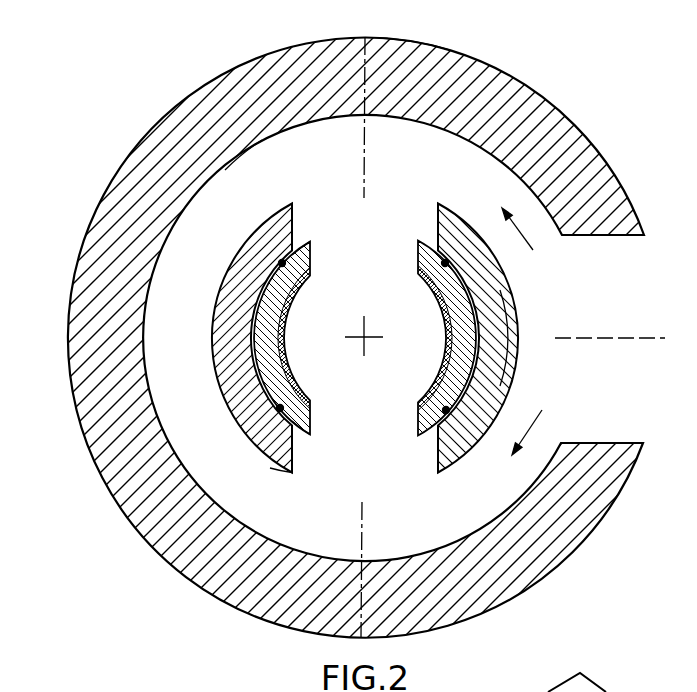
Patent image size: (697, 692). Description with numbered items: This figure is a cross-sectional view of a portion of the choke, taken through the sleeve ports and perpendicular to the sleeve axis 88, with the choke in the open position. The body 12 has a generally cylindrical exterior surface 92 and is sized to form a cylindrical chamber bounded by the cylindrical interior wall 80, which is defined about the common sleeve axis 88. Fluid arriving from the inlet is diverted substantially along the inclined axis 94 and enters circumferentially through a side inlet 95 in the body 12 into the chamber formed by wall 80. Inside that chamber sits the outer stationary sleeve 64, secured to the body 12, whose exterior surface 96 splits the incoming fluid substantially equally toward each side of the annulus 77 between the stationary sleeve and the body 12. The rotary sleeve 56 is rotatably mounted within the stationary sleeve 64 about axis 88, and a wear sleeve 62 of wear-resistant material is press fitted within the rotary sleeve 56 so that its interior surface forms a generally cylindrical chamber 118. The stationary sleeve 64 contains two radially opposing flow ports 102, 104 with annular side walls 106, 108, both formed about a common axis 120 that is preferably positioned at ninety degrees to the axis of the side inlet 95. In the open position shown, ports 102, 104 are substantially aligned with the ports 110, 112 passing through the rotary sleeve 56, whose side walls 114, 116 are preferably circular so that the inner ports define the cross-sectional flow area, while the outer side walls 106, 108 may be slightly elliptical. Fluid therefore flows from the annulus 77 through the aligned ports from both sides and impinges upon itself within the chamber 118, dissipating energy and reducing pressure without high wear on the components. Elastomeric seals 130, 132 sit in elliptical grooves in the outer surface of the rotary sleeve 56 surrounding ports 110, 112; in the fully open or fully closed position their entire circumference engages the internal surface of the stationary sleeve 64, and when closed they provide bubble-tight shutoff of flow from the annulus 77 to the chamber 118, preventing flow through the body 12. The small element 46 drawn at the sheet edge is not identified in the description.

The body 12 is at (533, 112).
The cylindrical exterior surface 92 is at (415, 42).
The cylindrical interior wall 80 is at (243, 157).
The common axis of the outer sleeve ports 120 is at (368, 124).
The inclined axis 94 is at (592, 337).
The sleeve axis 88 is at (366, 340).
The outer stationary sleeve 64 is at (465, 242).
The exterior surface of the stationary sleeve 96 is at (519, 328).
The wear sleeve 62 is at (440, 382).
The annular side wall of flow port 102 106 is at (293, 203).
The annular side wall of flow port 104 108 is at (293, 473).
The rotary sleeve 56 is at (286, 366).
The side wall of port 110 114 is at (309, 243).
The side wall of port 112 116 is at (310, 435).
The elastomeric seal 130 is at (280, 262).
The elastomeric seal 132 is at (279, 408).
The flow port in outer sleeve 102 is at (344, 229).
The port in inner sleeve 110 is at (344, 264).
The cylindrical chamber 118 is at (304, 320).
The port in inner sleeve 112 is at (344, 434).
The flow port in outer sleeve 104 is at (344, 474).
The annulus 77 is at (176, 425).
The side inlet 95 is at (573, 277).
The adjacent element 46 is at (548, 690).